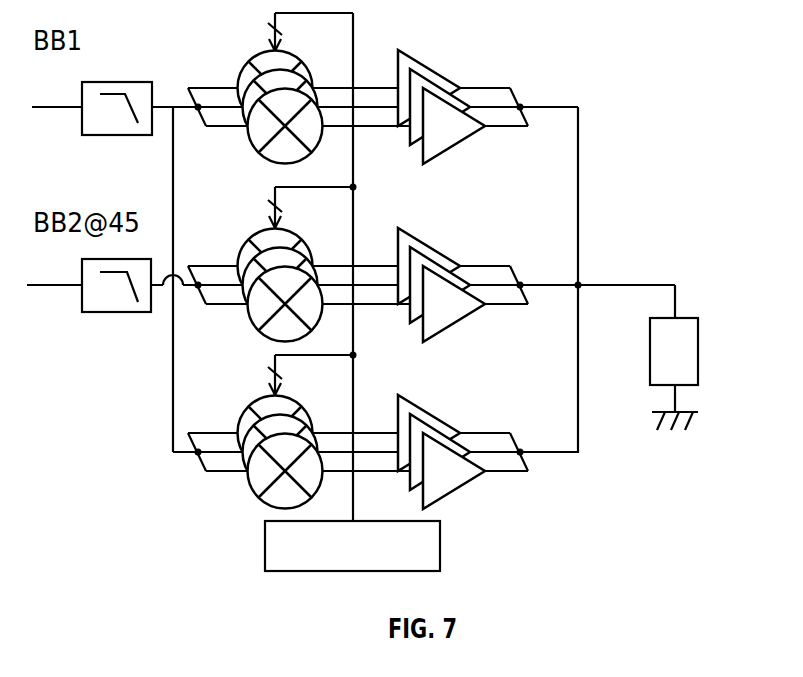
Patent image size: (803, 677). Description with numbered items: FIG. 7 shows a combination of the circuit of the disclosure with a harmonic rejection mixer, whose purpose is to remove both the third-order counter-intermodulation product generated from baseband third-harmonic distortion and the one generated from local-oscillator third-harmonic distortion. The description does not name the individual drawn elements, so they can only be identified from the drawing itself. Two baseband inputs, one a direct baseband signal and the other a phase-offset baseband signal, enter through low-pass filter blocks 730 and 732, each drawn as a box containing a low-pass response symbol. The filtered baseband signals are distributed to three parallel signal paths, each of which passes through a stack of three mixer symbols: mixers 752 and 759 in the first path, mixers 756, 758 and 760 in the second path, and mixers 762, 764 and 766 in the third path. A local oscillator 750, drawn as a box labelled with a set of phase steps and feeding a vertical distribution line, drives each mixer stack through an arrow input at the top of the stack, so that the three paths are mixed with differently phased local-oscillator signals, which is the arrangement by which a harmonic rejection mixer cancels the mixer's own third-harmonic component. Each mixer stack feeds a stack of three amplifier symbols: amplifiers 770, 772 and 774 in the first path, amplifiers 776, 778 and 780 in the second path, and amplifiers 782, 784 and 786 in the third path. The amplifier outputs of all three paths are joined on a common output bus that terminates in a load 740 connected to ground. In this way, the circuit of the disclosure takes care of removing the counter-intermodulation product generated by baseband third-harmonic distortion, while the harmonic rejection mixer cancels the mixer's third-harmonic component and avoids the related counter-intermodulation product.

The low-pass filter 730 is at (113, 82).
The low-pass filter 732 is at (107, 313).
The load impedance 740 is at (698, 350).
The local oscillator signal 750 is at (287, 47).
The mixer 752 is at (308, 69).
The mixer 756 is at (242, 248).
The mixer 758 is at (308, 255).
The mixer 759 is at (290, 163).
The mixer 760 is at (306, 336).
The mixer 762 is at (242, 415).
The mixer 764 is at (308, 416).
The mixer 766 is at (250, 485).
The amplifier 770 is at (409, 56).
The amplifier 772 is at (447, 90).
The amplifier 774 is at (452, 150).
The amplifier 776 is at (416, 240).
The amplifier 778 is at (459, 276).
The amplifier 780 is at (468, 316).
The amplifier 782 is at (424, 411).
The amplifier 784 is at (459, 444).
The amplifier 786 is at (467, 484).